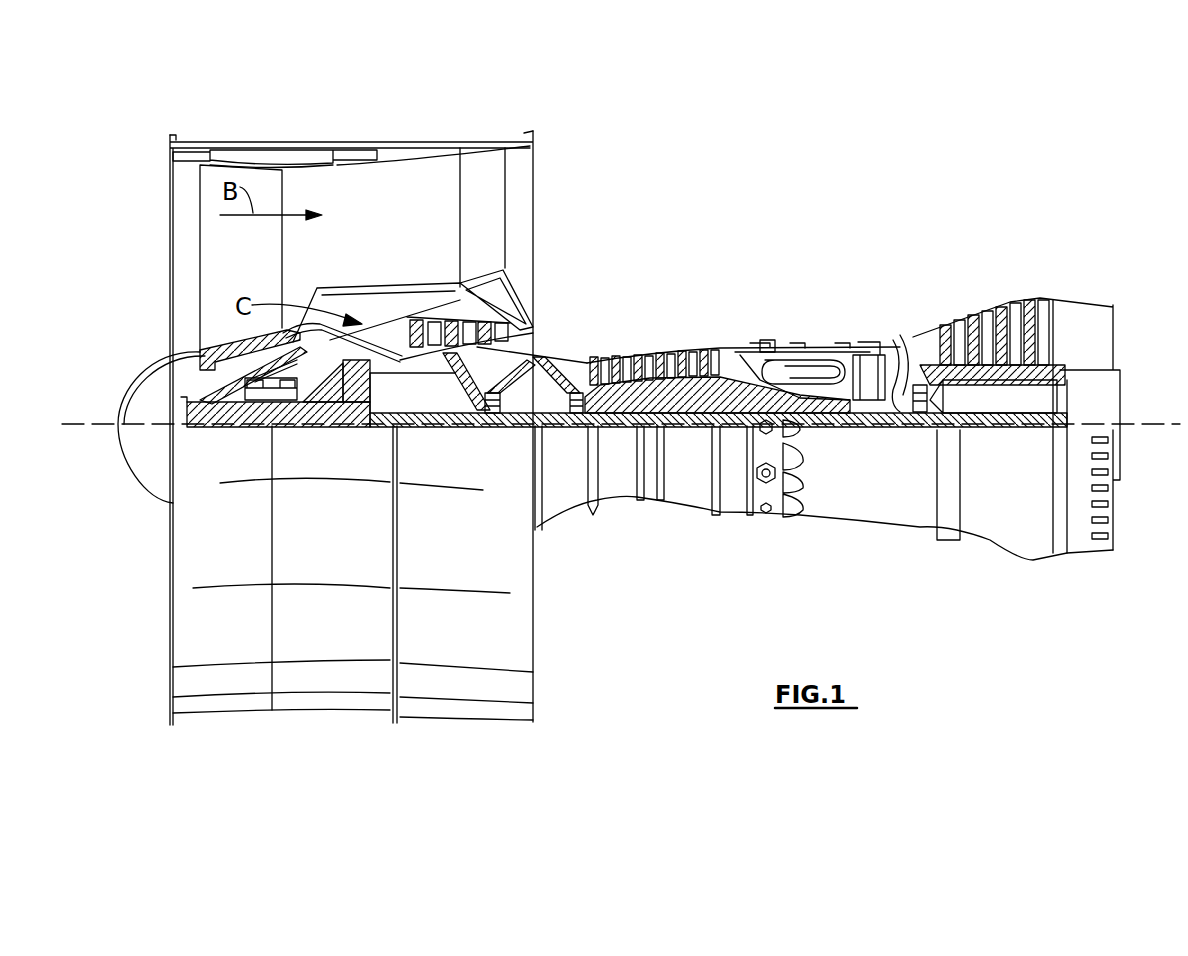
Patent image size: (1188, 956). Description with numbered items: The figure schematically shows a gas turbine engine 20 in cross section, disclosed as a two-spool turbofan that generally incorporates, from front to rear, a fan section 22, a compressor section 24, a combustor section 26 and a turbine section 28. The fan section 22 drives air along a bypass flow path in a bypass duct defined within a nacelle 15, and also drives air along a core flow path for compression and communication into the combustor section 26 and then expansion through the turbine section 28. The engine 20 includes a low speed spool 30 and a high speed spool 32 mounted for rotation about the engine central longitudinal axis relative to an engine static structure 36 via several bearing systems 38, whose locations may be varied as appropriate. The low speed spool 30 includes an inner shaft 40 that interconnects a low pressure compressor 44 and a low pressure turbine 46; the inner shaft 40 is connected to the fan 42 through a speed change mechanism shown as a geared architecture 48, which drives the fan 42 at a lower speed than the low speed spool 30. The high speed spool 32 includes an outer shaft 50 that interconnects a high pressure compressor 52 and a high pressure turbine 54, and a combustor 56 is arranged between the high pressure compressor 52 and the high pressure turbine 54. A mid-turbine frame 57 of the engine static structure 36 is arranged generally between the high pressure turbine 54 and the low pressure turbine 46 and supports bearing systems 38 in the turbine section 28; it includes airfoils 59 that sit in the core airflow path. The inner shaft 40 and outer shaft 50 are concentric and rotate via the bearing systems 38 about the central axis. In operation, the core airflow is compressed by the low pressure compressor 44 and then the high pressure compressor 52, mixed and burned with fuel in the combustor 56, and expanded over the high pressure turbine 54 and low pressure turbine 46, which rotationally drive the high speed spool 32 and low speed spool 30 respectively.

The nacelle 15 is at (355, 146).
The gas turbine engine 20 is at (814, 196).
The fan section 22 is at (282, 136).
The compressor section 24 is at (582, 336).
The combustor section 26 is at (806, 324).
The turbine section 28 is at (951, 289).
The low speed spool 30 is at (691, 428).
The high speed spool 32 is at (738, 370).
The engine static structure 36 is at (729, 510).
The bearing systems 38 is at (492, 428).
The inner shaft 40 is at (552, 430).
The fan 42 is at (256, 269).
The low pressure compressor 44 is at (457, 343).
The low pressure turbine 46 is at (1000, 320).
The geared architecture 48 is at (355, 402).
The outer shaft 50 is at (810, 420).
The high pressure compressor 52 is at (670, 395).
The high pressure turbine 54 is at (873, 350).
The combustor 56 is at (805, 372).
The mid-turbine frame 57 is at (914, 337).
The airfoils 59 is at (950, 398).